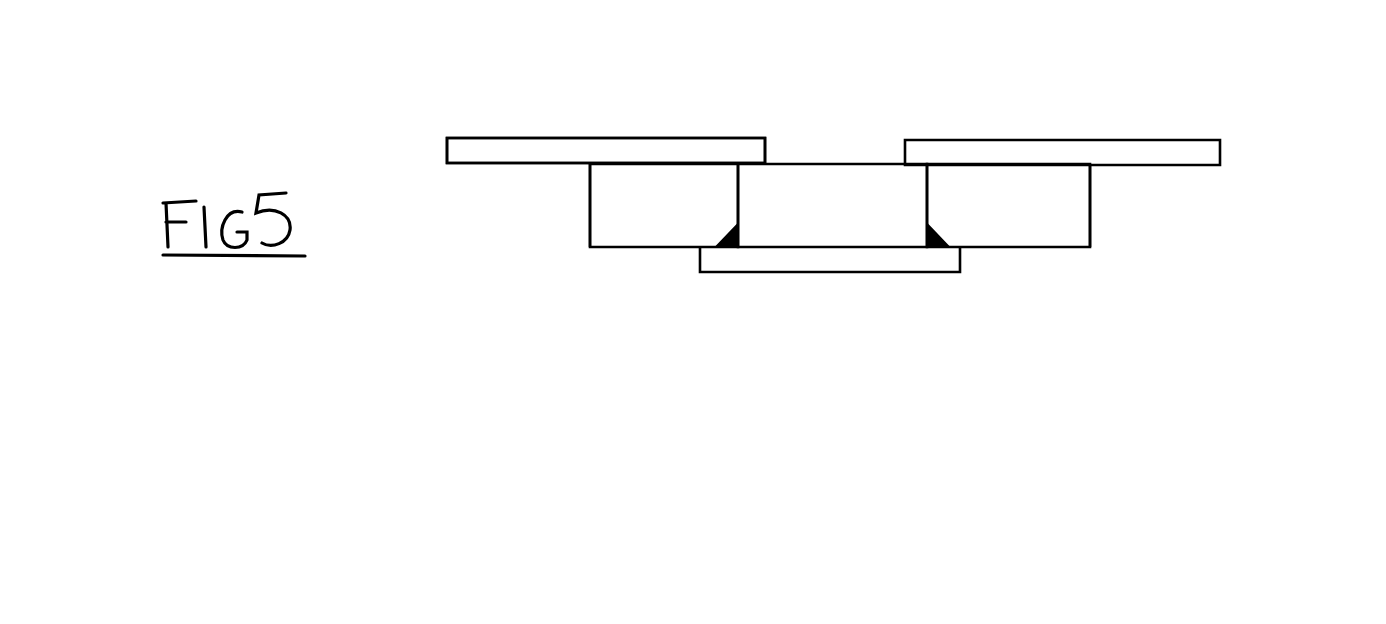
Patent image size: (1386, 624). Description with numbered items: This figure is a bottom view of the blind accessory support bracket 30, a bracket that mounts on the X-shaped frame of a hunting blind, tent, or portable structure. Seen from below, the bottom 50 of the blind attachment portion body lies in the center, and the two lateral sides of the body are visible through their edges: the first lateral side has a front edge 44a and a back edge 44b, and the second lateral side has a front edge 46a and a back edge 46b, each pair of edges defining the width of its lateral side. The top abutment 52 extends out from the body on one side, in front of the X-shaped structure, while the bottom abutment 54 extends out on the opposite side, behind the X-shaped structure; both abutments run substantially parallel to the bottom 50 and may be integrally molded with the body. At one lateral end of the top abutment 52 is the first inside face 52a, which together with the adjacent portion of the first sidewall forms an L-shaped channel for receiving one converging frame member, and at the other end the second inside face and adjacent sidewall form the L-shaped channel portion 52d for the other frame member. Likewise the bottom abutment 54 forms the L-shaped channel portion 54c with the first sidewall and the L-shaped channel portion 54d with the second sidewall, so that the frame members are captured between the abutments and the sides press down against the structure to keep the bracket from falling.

The blind accessory support bracket 30 is at (1258, 218).
The top abutment 52 is at (500, 140).
The front edge of first lateral side 44a is at (640, 148).
The back edge of first lateral side 44b is at (675, 248).
The first inside face of top abutment 52a is at (584, 186).
The bottom of blind attachment portion body 50 is at (857, 182).
The front edge of second lateral side 46a is at (990, 148).
The back edge of second lateral side 46b is at (1053, 250).
The L-shaped channel portion of top abutment 52d is at (1105, 172).
The bottom abutment 54 is at (828, 272).
The L-shaped channel portion of bottom abutment 54c is at (722, 227).
The L-shaped channel portion of bottom abutment 54d is at (950, 234).